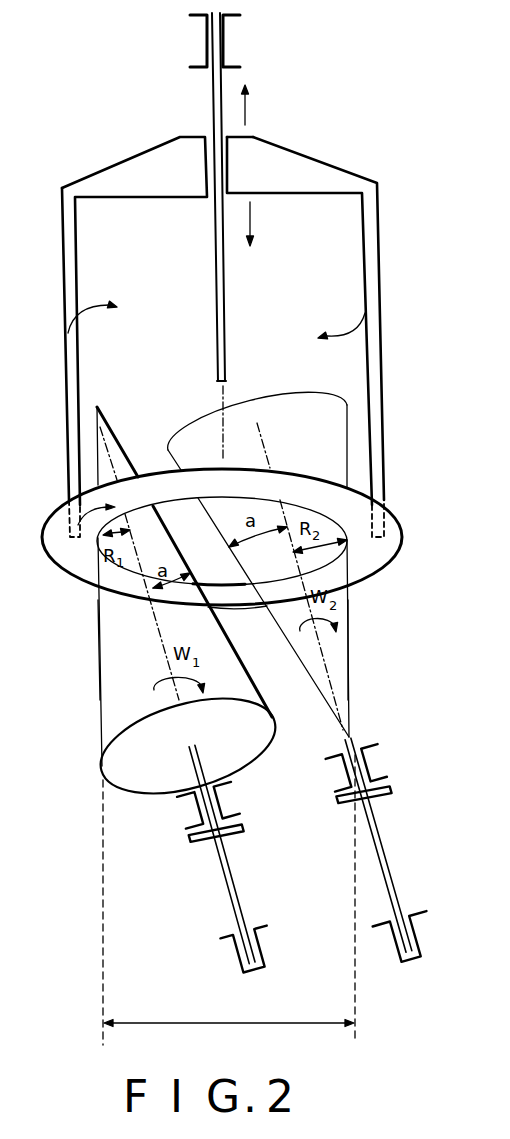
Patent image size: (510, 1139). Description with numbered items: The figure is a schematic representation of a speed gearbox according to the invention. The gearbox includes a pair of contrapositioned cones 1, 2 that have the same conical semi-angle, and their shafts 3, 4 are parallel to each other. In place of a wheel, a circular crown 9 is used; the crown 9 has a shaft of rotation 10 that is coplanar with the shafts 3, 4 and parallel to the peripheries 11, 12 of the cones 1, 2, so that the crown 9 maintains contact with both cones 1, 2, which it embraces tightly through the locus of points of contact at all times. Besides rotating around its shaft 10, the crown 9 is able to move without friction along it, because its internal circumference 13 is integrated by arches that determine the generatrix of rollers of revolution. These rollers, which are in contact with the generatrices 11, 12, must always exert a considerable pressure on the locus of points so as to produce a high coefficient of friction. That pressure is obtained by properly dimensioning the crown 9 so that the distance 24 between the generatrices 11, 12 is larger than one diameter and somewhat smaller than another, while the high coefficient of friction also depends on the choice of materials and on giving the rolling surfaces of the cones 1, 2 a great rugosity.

The cone 1 is at (118, 696).
The cone 2 is at (340, 632).
The shaft 3 is at (160, 646).
The shaft 4 is at (332, 685).
The circular crown 9 is at (347, 510).
The shaft of rotation 10 is at (223, 438).
The periphery 11 is at (100, 633).
The periphery 12 is at (350, 648).
The internal circumference 13 is at (170, 500).
The distance 24 is at (222, 1023).